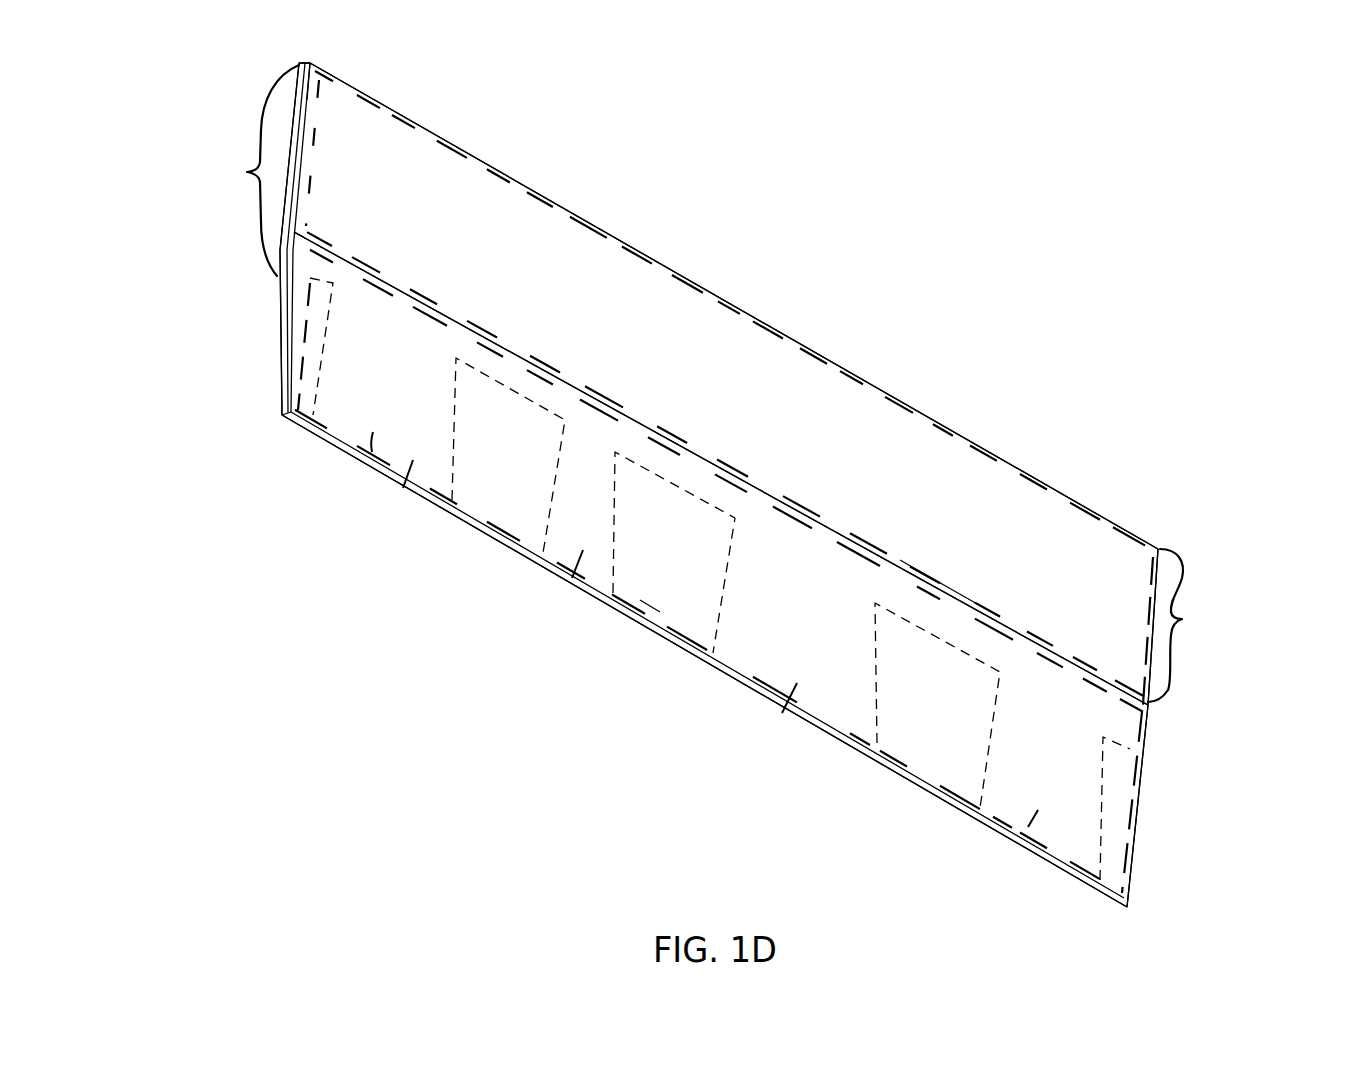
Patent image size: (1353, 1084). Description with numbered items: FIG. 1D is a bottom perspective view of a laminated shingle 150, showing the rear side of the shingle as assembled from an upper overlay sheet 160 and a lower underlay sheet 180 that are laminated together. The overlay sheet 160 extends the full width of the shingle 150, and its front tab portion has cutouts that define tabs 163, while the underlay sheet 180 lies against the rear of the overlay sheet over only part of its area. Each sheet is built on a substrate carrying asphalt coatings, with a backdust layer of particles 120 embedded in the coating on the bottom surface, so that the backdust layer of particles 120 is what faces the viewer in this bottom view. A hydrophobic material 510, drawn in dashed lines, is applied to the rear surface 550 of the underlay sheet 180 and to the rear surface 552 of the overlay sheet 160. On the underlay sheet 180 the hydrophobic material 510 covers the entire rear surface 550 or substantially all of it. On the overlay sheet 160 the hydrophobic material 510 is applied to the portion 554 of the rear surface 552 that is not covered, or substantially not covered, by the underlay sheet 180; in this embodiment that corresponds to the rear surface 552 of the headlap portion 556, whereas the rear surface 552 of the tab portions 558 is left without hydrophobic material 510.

The backdust layer of particles 120 is at (345, 92).
The shingle 150 is at (733, 280).
The overlay sheet 160 is at (855, 406).
The tabs 163 is at (363, 470).
The underlay sheet 180 is at (648, 610).
The hydrophobic material 510 is at (953, 428).
The rear surface of the underlay sheet 550 is at (958, 630).
The rear surface of the overlay sheet 552 is at (1102, 565).
The portion of the rear surface not covered by the underlay sheet 554 is at (1182, 619).
The headlap portion 556 is at (247, 172).
The tab portions 558 is at (400, 493).